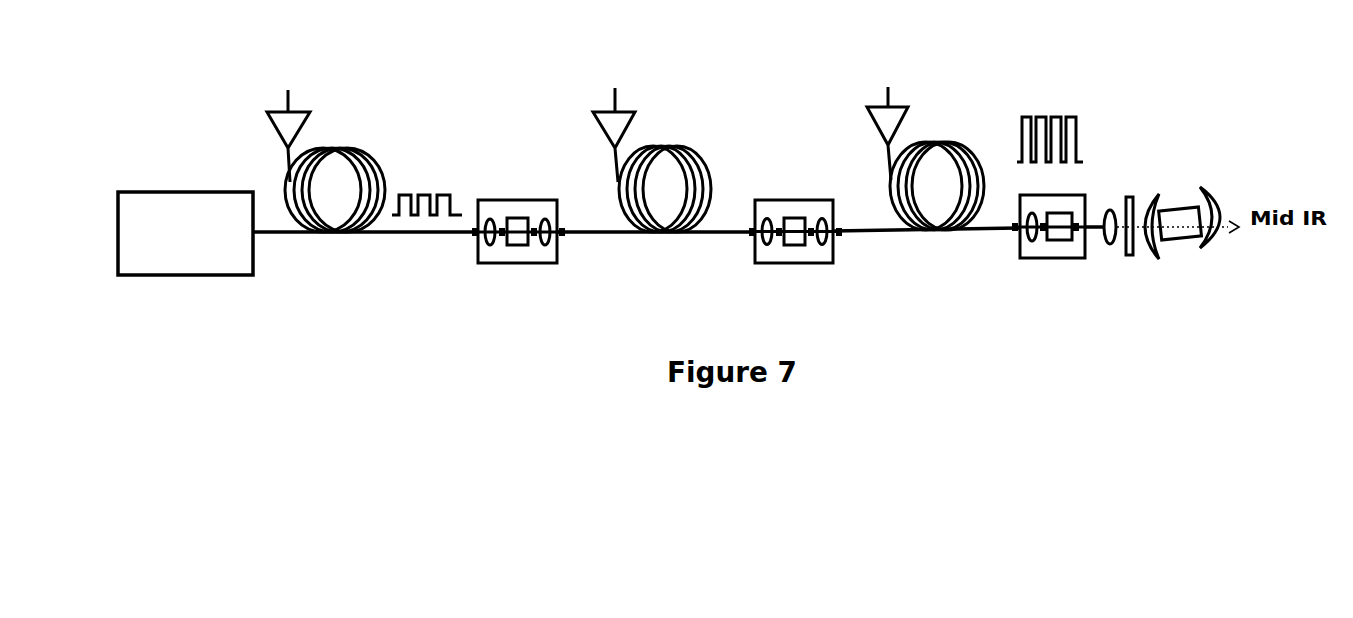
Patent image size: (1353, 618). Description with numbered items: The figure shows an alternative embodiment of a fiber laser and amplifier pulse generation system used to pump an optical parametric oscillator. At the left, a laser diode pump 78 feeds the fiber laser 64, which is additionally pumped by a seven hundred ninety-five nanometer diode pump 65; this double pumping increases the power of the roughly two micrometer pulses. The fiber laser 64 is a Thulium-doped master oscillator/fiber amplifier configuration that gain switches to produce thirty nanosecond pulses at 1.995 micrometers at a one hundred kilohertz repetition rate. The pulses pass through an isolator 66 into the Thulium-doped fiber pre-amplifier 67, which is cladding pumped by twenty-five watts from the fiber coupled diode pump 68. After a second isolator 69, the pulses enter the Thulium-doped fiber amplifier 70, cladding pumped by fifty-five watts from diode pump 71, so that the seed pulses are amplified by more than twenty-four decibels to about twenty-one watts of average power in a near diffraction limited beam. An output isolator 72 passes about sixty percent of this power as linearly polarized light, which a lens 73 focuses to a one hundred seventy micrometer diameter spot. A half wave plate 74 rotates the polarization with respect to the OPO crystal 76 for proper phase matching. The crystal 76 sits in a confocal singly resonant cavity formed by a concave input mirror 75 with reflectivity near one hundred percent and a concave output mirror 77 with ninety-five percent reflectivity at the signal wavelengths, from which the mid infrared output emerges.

The fiber laser 64 is at (340, 240).
The diode pump 65 is at (283, 147).
The isolator 66 is at (535, 265).
The fiber pre-amplifier 67 is at (667, 238).
The 795 nm fiber coupled diode pump 68 is at (607, 140).
The isolator 69 is at (815, 265).
The fiber amplifier 70 is at (940, 235).
The diode pump 71 is at (880, 138).
The output isolator 72 is at (1068, 262).
The lens 73 is at (1113, 248).
The half wave plate 74 is at (1128, 192).
The input mirror 75 is at (1153, 195).
The optical parametric oscillator (OPO) crystal 76 is at (1178, 243).
The output mirror 77 is at (1213, 248).
The laser diode pump 78 is at (162, 280).